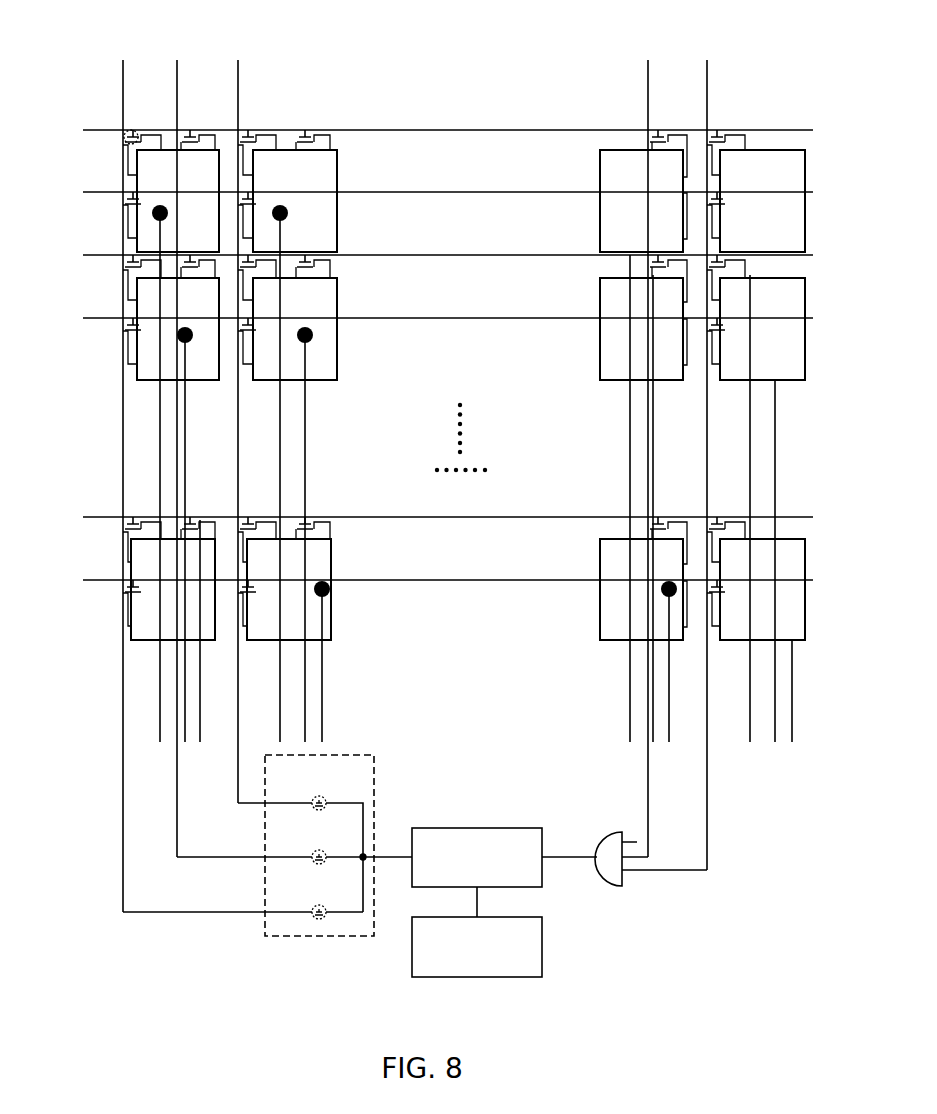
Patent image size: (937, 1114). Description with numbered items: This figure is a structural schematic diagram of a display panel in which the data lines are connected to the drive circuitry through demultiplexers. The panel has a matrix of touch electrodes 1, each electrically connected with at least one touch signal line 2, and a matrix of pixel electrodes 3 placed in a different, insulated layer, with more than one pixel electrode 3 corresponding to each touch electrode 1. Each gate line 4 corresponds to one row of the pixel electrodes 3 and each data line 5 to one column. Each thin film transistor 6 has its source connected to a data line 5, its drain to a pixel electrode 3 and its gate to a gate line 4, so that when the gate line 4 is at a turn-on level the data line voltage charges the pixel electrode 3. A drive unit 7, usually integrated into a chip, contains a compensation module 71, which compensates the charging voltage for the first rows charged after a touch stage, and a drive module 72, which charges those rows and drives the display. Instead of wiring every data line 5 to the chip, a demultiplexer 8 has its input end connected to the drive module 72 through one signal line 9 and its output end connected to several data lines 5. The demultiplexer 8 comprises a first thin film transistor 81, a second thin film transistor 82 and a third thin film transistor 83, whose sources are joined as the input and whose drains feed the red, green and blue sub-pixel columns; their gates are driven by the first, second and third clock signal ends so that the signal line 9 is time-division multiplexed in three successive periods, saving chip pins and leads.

The touch electrode 1 is at (317, 165).
The touch signal line 2 is at (322, 705).
The pixel electrode 3 is at (205, 140).
The gate line 4 is at (105, 192).
The data line 5 is at (177, 452).
The thin film transistor 6 is at (127, 133).
The drive unit 7 is at (521, 902).
The compensation module 71 is at (601, 903).
The drive module 72 is at (542, 880).
The demultiplexer 8 is at (280, 938).
The first thin film transistor 81 is at (325, 798).
The second thin film transistor 82 is at (312, 852).
The third thin film transistor 83 is at (322, 918).
The signal line 9 is at (383, 857).